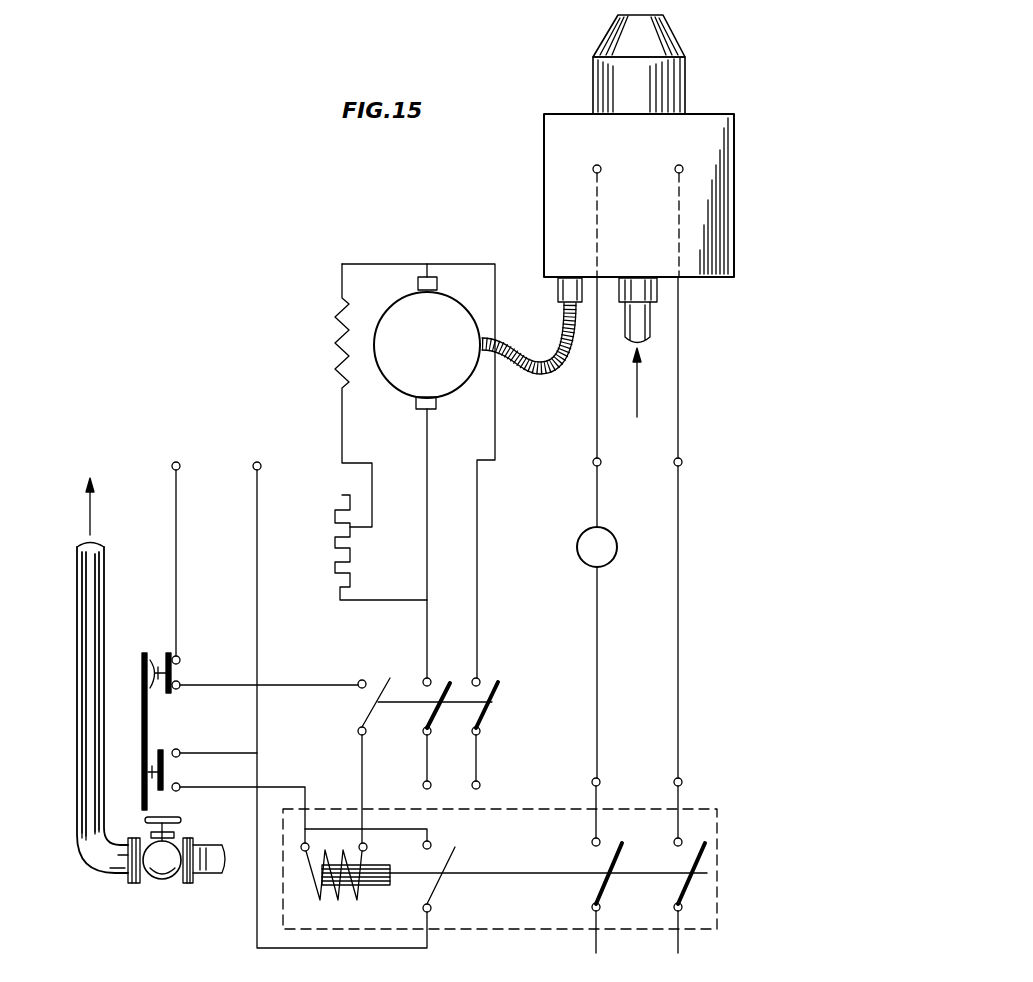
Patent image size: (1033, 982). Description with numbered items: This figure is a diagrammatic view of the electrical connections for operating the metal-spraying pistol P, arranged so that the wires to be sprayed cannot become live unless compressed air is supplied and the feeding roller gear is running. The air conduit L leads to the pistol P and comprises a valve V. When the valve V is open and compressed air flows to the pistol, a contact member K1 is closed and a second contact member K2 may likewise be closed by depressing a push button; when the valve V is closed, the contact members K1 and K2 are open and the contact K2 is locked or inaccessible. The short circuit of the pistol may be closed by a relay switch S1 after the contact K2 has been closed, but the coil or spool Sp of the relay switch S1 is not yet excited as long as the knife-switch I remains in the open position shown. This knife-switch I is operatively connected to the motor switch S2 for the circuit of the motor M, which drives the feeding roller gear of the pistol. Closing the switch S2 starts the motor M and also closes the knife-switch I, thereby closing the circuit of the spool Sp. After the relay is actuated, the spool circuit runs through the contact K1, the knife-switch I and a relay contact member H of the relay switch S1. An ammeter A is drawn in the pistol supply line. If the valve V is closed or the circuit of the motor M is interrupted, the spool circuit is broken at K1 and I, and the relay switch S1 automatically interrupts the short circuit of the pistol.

The pistol P is at (718, 190).
The motor M is at (427, 343).
The ammeter A is at (597, 547).
The knife-switch I is at (374, 692).
The motor switch S2 is at (442, 733).
The relay switch S1 is at (607, 865).
The coil or spool Sp is at (350, 881).
The relay contact member H is at (451, 876).
The contact member K1 is at (180, 670).
The second contact member K2 is at (182, 751).
The air conduit L is at (92, 842).
The valve V is at (167, 875).